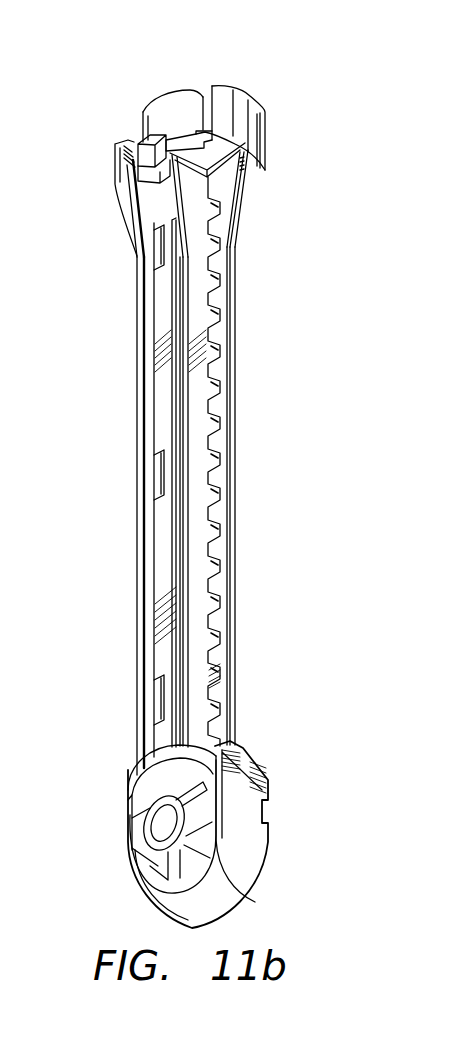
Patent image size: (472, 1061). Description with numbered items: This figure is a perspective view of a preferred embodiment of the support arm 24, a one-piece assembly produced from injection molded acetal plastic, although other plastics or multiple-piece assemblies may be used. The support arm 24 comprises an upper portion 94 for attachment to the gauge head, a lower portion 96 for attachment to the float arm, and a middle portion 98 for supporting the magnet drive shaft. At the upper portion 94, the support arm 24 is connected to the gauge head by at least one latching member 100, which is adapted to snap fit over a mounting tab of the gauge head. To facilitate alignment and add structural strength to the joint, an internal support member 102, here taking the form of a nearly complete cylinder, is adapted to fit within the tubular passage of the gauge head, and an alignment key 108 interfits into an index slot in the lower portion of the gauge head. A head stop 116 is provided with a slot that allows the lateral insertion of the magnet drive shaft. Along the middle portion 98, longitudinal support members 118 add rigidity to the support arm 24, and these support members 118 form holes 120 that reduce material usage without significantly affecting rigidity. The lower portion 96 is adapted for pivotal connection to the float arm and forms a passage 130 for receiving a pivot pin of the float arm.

The support arm 24 is at (83, 66).
The upper portion 94 is at (303, 143).
The lower portion 96 is at (301, 811).
The middle portion 98 is at (100, 483).
The latching member 100 is at (248, 107).
The internal support member 102 is at (162, 110).
The alignment key 108 is at (140, 142).
The head stop 116 is at (256, 172).
The longitudinal support members 118 is at (216, 392).
The holes 120 is at (211, 576).
The passage 130 is at (147, 826).